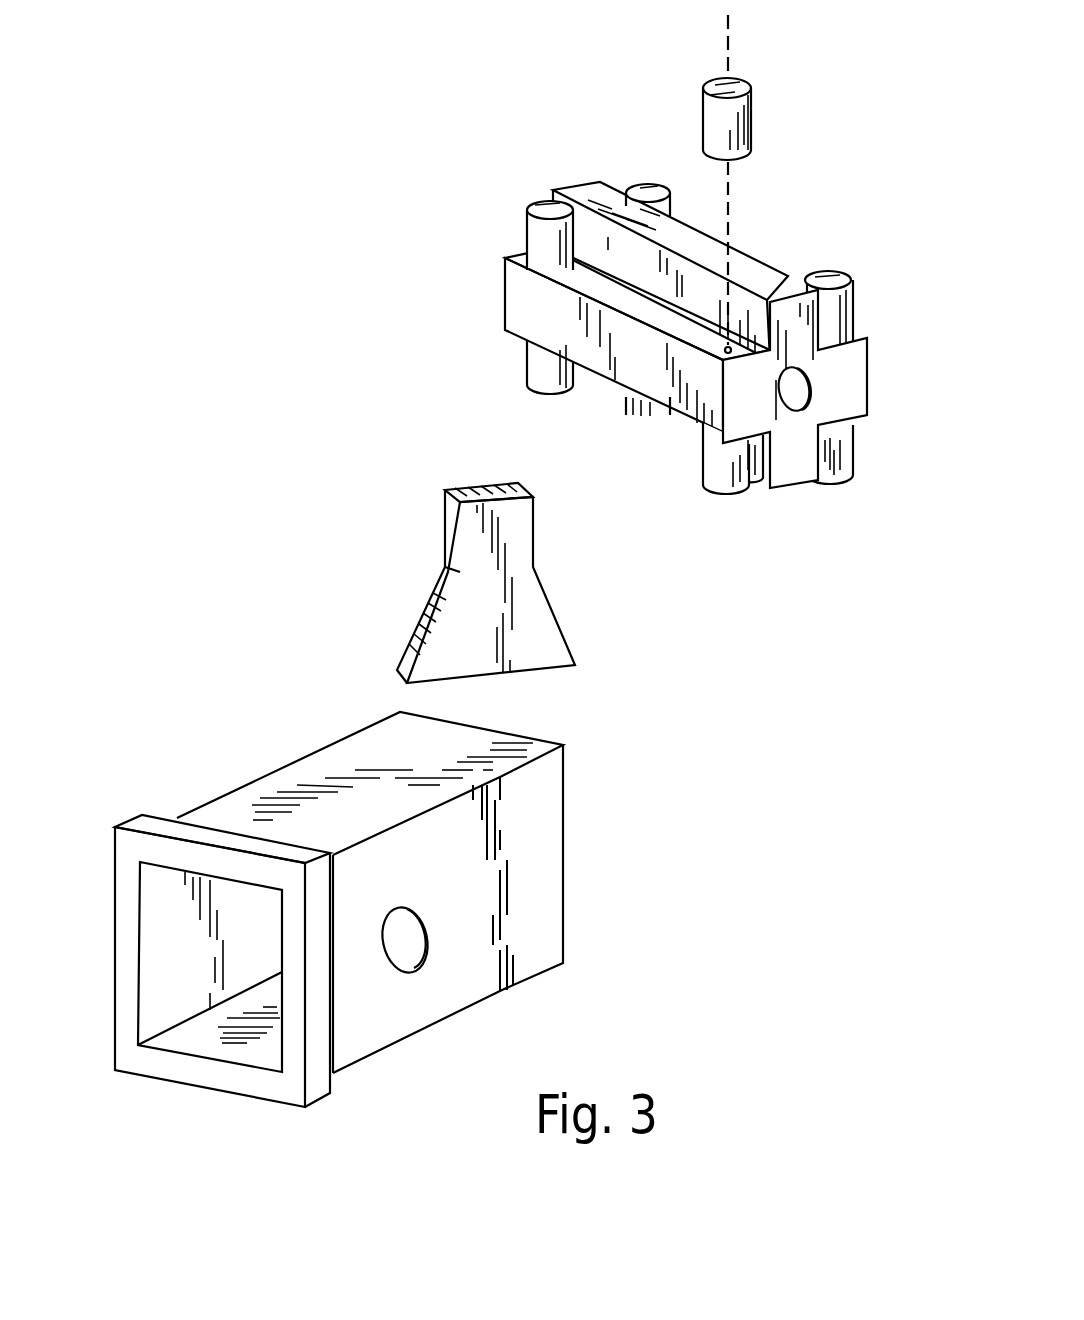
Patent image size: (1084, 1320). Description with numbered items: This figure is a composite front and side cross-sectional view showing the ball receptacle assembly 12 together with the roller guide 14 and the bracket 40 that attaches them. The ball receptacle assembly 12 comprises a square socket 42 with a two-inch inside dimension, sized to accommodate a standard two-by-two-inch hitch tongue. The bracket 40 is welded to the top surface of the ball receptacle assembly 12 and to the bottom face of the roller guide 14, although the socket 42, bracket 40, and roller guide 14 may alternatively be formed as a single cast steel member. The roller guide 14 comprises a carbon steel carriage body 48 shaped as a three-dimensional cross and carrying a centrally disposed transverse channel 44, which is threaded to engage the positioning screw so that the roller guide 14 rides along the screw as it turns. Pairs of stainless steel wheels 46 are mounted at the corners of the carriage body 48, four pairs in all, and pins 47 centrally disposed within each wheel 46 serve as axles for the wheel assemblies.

The ball receptacle assembly 12 is at (333, 768).
The roller guide 14 is at (603, 197).
The bracket 40 is at (478, 535).
The square socket 42 is at (165, 980).
The transverse channel 44 is at (790, 450).
The stainless steel wheels 46 is at (752, 118).
The pins 47 is at (736, 50).
The carriage body 48 is at (530, 300).